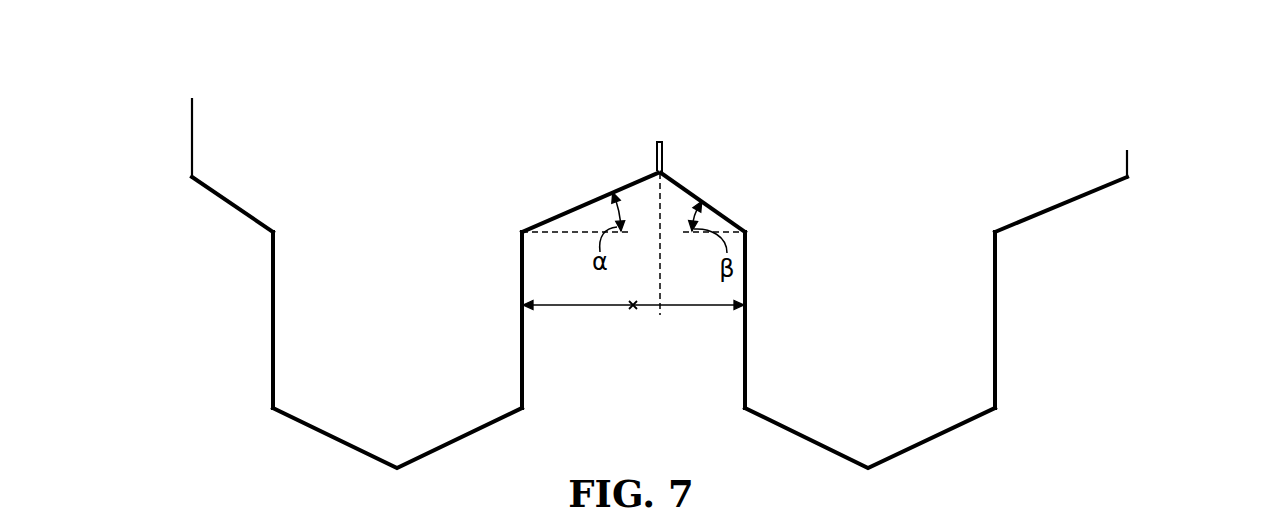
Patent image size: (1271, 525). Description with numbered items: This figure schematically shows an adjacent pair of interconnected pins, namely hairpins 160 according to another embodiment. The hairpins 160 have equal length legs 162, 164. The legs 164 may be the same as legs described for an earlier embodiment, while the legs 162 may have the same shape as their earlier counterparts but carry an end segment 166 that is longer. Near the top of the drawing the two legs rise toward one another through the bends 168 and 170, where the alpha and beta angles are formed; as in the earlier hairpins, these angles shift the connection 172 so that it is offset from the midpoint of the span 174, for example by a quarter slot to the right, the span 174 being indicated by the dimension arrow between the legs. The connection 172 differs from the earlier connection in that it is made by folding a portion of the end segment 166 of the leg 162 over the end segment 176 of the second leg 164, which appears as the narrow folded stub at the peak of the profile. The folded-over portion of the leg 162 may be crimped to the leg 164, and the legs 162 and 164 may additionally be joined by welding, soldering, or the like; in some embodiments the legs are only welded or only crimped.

The hairpins 160 is at (250, 90).
The leg 162 is at (273, 318).
The leg 164 is at (522, 365).
The end segment 166 is at (190, 137).
The bend 168 is at (522, 232).
The bend 170 is at (745, 232).
The connection 172 is at (664, 141).
The span 174 is at (634, 309).
The end segment 176 is at (655, 160).